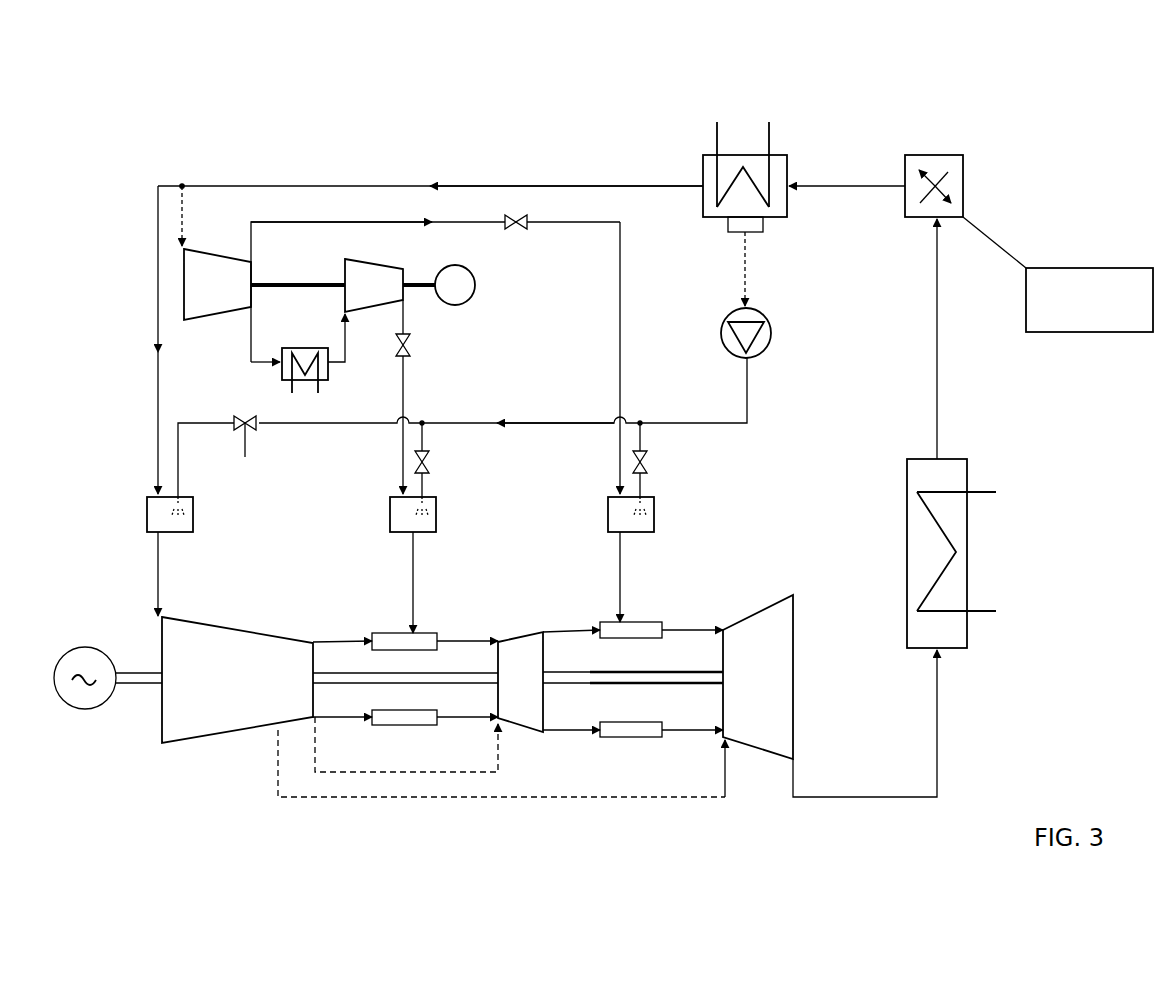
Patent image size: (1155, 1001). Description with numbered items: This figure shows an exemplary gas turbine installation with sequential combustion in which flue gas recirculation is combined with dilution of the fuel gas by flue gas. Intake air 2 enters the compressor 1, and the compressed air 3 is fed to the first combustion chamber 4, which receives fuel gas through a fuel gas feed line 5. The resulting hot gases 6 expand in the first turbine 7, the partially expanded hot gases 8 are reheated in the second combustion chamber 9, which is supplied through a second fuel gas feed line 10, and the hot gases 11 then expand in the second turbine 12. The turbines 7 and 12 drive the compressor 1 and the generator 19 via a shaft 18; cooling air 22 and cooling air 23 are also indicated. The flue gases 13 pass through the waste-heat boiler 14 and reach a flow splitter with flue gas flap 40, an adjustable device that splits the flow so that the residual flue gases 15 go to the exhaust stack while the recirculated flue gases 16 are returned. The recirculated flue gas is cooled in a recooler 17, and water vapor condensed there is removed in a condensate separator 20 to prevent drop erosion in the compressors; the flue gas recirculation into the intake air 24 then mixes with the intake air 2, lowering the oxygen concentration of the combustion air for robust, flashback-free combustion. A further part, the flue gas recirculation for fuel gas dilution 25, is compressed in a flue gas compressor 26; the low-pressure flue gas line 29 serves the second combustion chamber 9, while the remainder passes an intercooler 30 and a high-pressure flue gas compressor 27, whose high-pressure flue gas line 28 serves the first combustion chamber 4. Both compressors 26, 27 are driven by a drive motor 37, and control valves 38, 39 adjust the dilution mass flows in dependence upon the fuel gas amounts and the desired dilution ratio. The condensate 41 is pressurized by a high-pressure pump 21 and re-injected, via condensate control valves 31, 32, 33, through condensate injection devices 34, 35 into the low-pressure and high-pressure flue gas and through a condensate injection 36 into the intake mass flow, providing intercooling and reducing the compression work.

The compressor 1 is at (237, 680).
The intake air 2 is at (155, 410).
The compressed air 3 is at (345, 725).
The first combustion chamber 4 is at (390, 640).
The fuel gas feed line 5 is at (417, 575).
The hot gases 6 is at (458, 717).
The first turbine 7 is at (490, 682).
The partially expanded hot gases 8 is at (570, 730).
The second combustion chamber 9 is at (607, 623).
The fuel gas feed line 10 is at (624, 575).
The hot gases 11 is at (688, 737).
The second turbine 12 is at (727, 677).
The flue gases 13 is at (862, 797).
The waste-heat boiler 14 is at (954, 530).
The flue gas line to the exhaust stack 15 is at (932, 155).
The recirculated flue gases 16 is at (832, 186).
The recooler 17 is at (733, 164).
The shaft 18 is at (138, 678).
The generator 19 is at (77, 697).
The condensate separator 20 is at (752, 226).
The high-pressure pump 21 is at (760, 345).
The cooling air 22 is at (315, 755).
The cooling air 23 is at (727, 763).
The flue gas recirculation into the intake air 24 is at (158, 311).
The flue gas recirculation for fuel gas dilution 25 is at (182, 222).
The flue gas compressor 26 is at (264, 284).
The high-pressure flue gas compressor 27 is at (390, 285).
The high-pressure flue gas line for fuel gas dilution 28 is at (403, 387).
The low-pressure flue gas line for fuel gas dilution 29 is at (350, 222).
The intercooler 30 is at (312, 376).
The condensate control valve 31 is at (648, 462).
The condensate control valve 32 is at (430, 462).
The condensate control valve 33 is at (245, 456).
The condensate injection into low-pressure flue gas 34 is at (650, 523).
The condensate injection into high-pressure flue gas 35 is at (430, 523).
The condensate injection into the intake mass flow 36 is at (147, 515).
The drive motor of the flue gas compressor 37 is at (477, 287).
The control valve for fuel gas dilution 38 is at (410, 345).
The control valve for fuel gas dilution 39 is at (516, 222).
The flow splitter with flue gas flap 40 is at (950, 183).
The condensate 41 is at (675, 423).